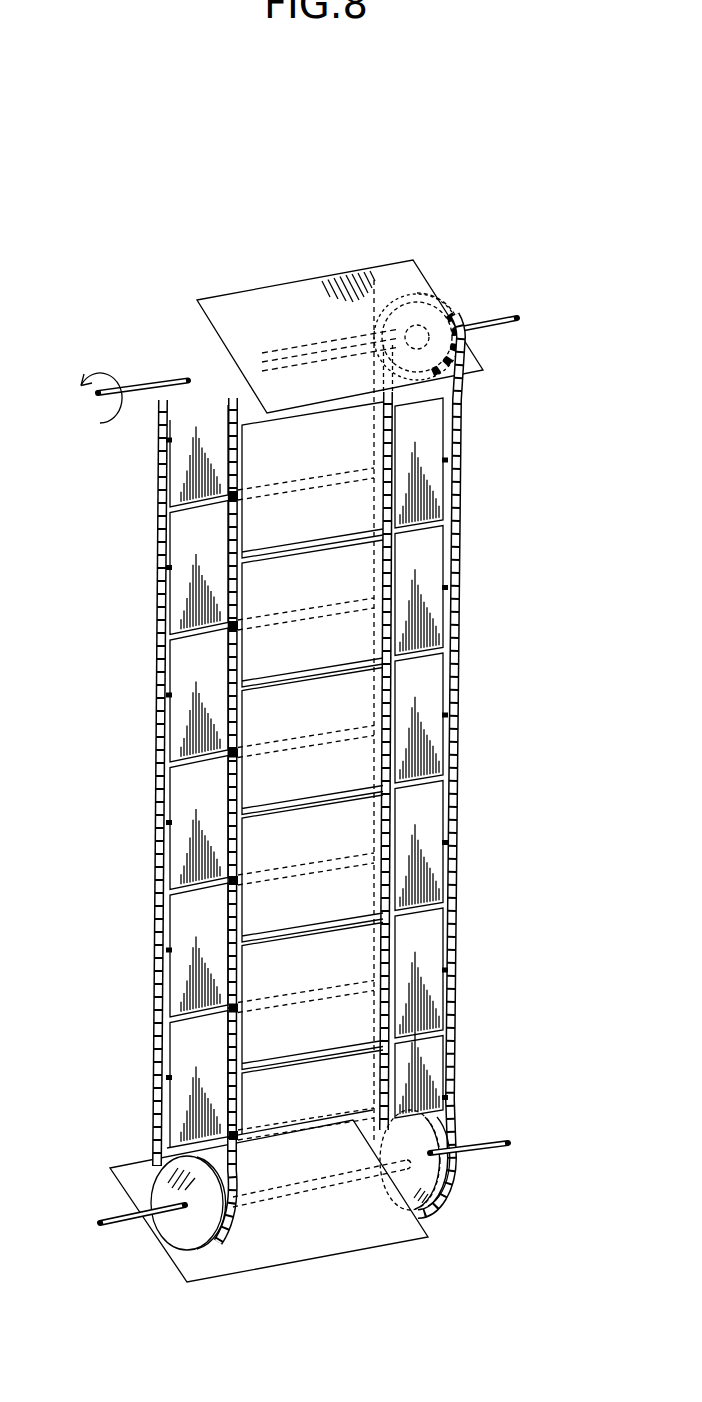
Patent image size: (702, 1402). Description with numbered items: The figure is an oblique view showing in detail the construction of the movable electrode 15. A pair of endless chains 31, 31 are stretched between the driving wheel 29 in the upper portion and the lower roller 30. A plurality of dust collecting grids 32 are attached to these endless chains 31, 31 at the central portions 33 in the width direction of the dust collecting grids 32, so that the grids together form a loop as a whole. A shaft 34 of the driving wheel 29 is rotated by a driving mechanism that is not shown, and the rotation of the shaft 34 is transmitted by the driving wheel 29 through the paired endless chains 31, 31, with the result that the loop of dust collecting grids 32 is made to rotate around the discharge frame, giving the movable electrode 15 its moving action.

The movable electrode 15 is at (530, 532).
The driving wheel 29 is at (417, 336).
The lower roller 30 is at (200, 1235).
The endless chain 31 is at (153, 1053).
The dust collecting grid 32 is at (427, 813).
The central portion 33 is at (460, 702).
The shaft 34 is at (137, 388).